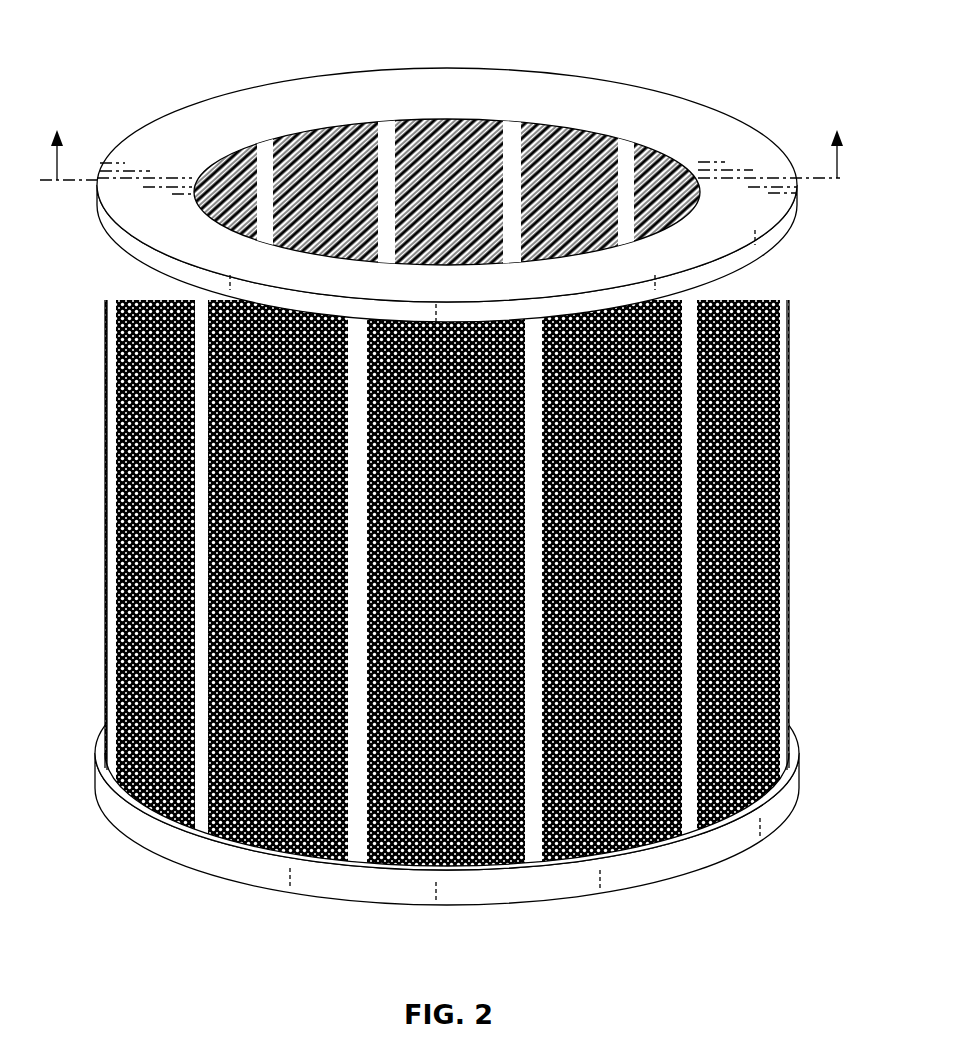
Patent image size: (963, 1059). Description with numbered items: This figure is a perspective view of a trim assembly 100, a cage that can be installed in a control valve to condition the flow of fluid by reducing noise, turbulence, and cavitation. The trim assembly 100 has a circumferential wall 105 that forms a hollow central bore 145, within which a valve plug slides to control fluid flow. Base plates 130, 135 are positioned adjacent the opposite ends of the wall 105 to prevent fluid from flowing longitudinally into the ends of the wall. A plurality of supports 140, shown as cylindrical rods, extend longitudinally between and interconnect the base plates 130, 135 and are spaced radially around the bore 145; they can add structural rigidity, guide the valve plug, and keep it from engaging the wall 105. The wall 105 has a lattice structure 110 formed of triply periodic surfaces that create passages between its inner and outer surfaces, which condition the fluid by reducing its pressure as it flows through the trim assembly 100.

The trim assembly 100 is at (114, 38).
The circumferential wall 105 is at (404, 488).
The lattice structure 110 is at (120, 357).
The base plate 130 is at (233, 105).
The base plate 135 is at (642, 870).
The supports 140 is at (516, 128).
The hollow central bore 145 is at (570, 152).